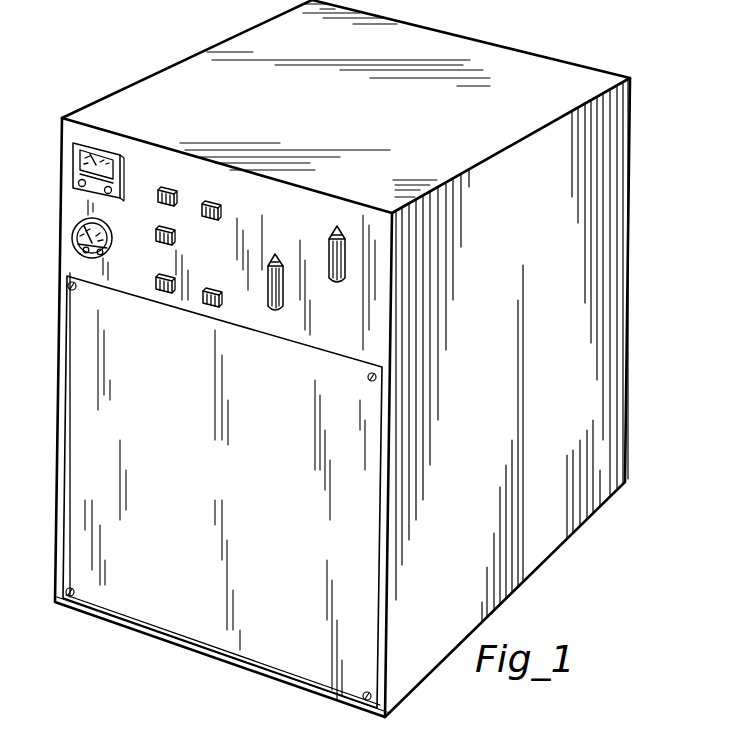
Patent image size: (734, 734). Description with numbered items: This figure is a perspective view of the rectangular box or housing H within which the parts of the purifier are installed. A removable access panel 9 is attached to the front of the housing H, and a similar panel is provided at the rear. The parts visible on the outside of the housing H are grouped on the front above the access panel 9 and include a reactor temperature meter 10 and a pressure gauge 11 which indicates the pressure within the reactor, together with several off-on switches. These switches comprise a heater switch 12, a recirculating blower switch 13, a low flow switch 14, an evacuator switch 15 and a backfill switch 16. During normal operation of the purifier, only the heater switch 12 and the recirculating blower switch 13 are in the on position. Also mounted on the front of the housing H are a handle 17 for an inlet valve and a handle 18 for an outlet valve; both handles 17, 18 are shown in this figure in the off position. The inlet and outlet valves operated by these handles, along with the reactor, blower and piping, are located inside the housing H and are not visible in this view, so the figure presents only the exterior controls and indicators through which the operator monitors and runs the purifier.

The housing H is at (632, 180).
The removable access panel 9 is at (348, 545).
The reactor temperature meter 10 is at (121, 156).
The pressure gauge 11 is at (73, 232).
The heater switch 12 is at (167, 189).
The recirculating blower switch 13 is at (212, 203).
The low flow switch 14 is at (173, 235).
The evacuator switch 15 is at (162, 288).
The backfill switch 16 is at (208, 305).
The handle for inlet valve 17 is at (282, 298).
The handle for outlet valve 18 is at (334, 280).